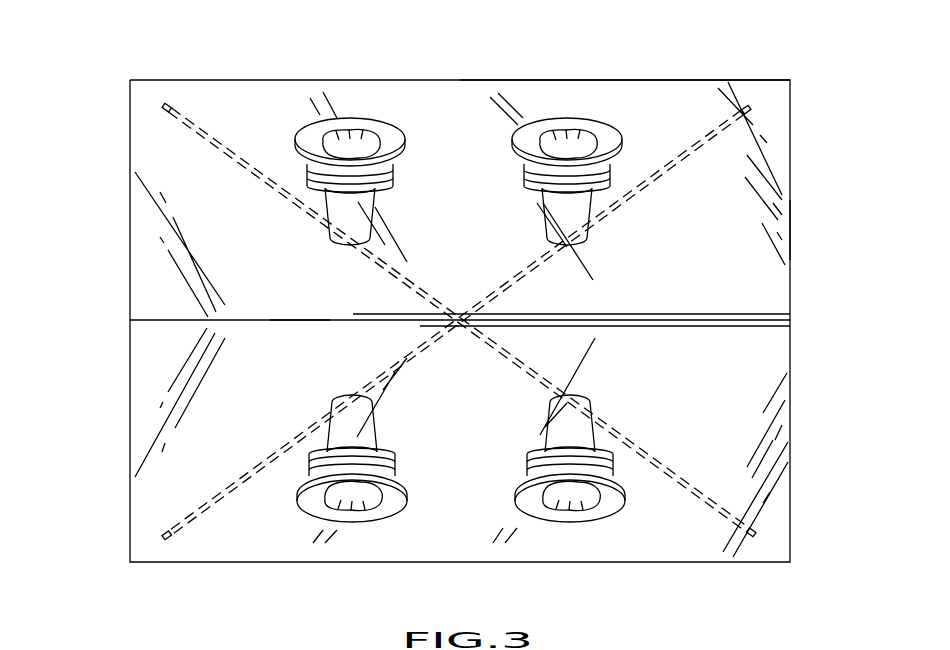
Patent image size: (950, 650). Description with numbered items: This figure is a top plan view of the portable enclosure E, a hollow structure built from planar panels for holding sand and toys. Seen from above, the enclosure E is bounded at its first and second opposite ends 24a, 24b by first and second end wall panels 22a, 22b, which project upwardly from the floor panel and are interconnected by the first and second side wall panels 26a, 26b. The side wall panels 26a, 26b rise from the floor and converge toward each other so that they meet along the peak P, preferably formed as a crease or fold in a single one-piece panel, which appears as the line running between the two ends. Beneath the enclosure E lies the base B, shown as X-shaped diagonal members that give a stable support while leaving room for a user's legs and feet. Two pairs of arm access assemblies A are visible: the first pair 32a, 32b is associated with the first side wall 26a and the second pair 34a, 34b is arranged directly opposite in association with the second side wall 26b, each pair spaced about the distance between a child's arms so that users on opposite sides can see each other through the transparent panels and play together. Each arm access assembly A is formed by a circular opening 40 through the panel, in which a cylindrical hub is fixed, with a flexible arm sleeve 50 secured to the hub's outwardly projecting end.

The first end wall panel 22a is at (123, 297).
The second end wall panel 22b is at (799, 303).
The first end 24a is at (141, 78).
The second end 24b is at (781, 75).
The first side wall panel 26a is at (427, 113).
The second side wall panel 26b is at (263, 528).
The first arm access assembly of first pair 32a is at (365, 112).
The second arm access assembly of first pair 32b is at (585, 112).
The first arm access assembly of second pair 34a is at (353, 532).
The second arm access assembly of second pair 34b is at (611, 528).
The circular opening 40 is at (384, 183).
The flexible arm sleeve 50 is at (340, 223).
The arm access assembly A is at (297, 118).
The base B is at (656, 187).
The portable enclosure E is at (798, 228).
The peak P is at (297, 318).